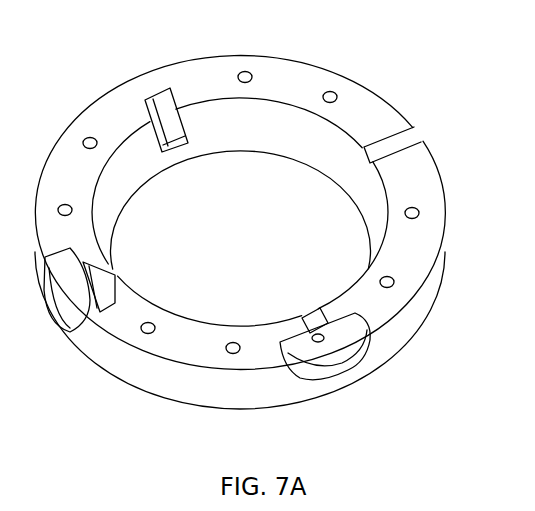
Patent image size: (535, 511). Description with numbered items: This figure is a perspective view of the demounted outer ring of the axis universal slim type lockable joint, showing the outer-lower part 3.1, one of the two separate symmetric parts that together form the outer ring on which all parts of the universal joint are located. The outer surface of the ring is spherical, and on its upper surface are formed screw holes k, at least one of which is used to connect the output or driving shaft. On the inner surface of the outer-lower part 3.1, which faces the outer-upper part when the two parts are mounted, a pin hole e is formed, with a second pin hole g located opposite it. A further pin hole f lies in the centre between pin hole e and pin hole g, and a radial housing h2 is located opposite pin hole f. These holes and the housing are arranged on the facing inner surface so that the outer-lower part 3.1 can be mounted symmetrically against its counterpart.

The outer-lower part 3.1 is at (100, 68).
The radial housing-2 h2 is at (164, 118).
The screw hole k is at (335, 94).
The pin hole- g is at (403, 142).
The pin hole- e is at (97, 278).
The pin hole- f is at (319, 326).